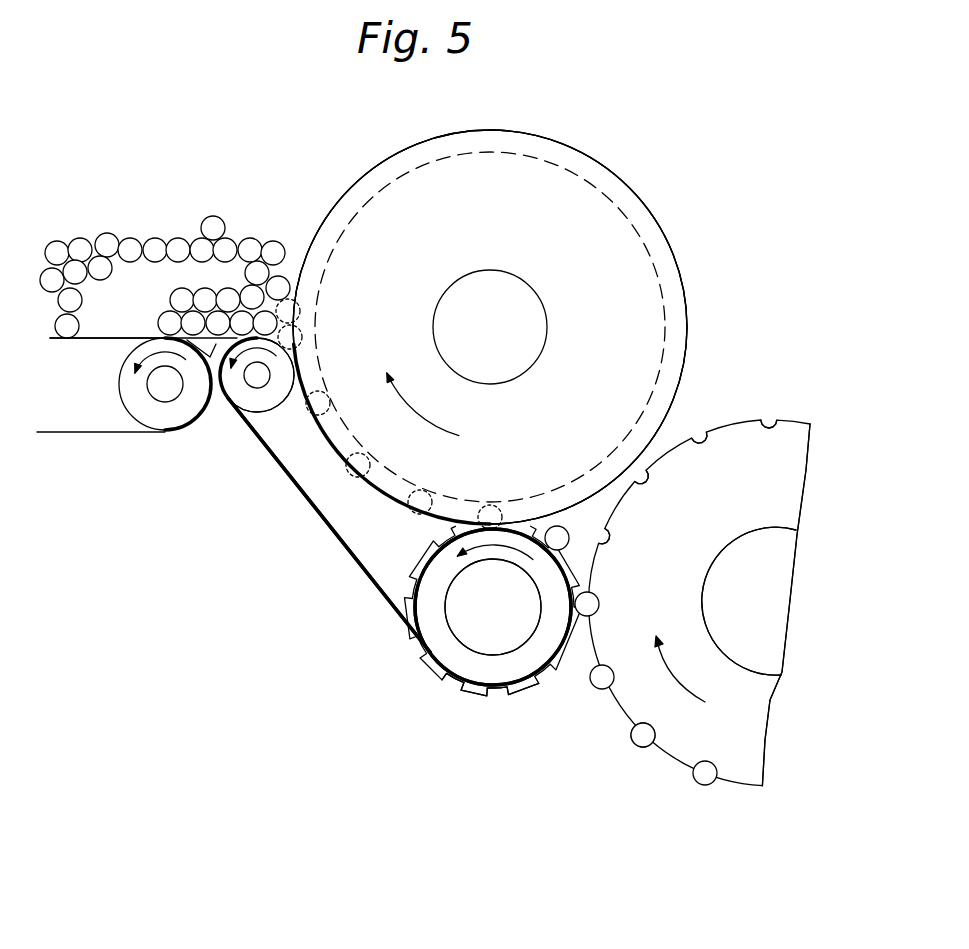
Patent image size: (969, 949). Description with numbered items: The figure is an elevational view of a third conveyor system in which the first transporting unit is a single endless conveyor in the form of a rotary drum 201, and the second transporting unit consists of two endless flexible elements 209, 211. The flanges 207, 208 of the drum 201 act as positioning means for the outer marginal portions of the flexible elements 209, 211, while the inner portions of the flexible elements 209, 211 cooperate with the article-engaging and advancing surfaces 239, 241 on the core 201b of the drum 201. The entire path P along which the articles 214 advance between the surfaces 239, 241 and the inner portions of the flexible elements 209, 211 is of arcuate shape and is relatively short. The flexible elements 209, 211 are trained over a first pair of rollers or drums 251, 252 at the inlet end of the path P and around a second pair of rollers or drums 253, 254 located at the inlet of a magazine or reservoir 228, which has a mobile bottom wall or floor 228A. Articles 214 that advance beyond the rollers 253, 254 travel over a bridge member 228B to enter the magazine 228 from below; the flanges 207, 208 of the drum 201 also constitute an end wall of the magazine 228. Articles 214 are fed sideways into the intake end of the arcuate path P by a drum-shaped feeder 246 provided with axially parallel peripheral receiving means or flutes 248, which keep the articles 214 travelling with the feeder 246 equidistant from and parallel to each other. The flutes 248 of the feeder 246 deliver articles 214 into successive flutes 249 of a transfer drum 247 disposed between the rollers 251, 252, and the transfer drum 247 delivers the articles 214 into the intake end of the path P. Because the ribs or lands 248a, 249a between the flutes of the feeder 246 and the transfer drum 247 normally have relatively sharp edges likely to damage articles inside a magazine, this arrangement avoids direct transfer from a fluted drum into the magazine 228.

The magazine 228 is at (172, 199).
The mobile bottom wall 228A is at (54, 433).
The bridge member 228B is at (188, 363).
The roller 253 is at (236, 398).
The roller 254 is at (239, 422).
The rotary drum 201 is at (630, 280).
The core 201b is at (463, 173).
The flange 207 is at (620, 178).
The flange 208 is at (513, 327).
The path P is at (335, 427).
The flexible element 209 is at (356, 562).
The flexible element 211 is at (329, 525).
The roller 251 is at (435, 638).
The roller 252 is at (441, 648).
The transfer drum 247 is at (465, 685).
The flute 249 is at (497, 690).
The article-engaging and advancing surface 239 is at (663, 348).
The article-engaging and advancing surface 241 is at (749, 511).
The flute 248 is at (770, 429).
The drum-shaped feeder 246 is at (742, 771).
The rib 249a is at (576, 575).
The article 214 is at (592, 688).
The rib 248a is at (678, 737).